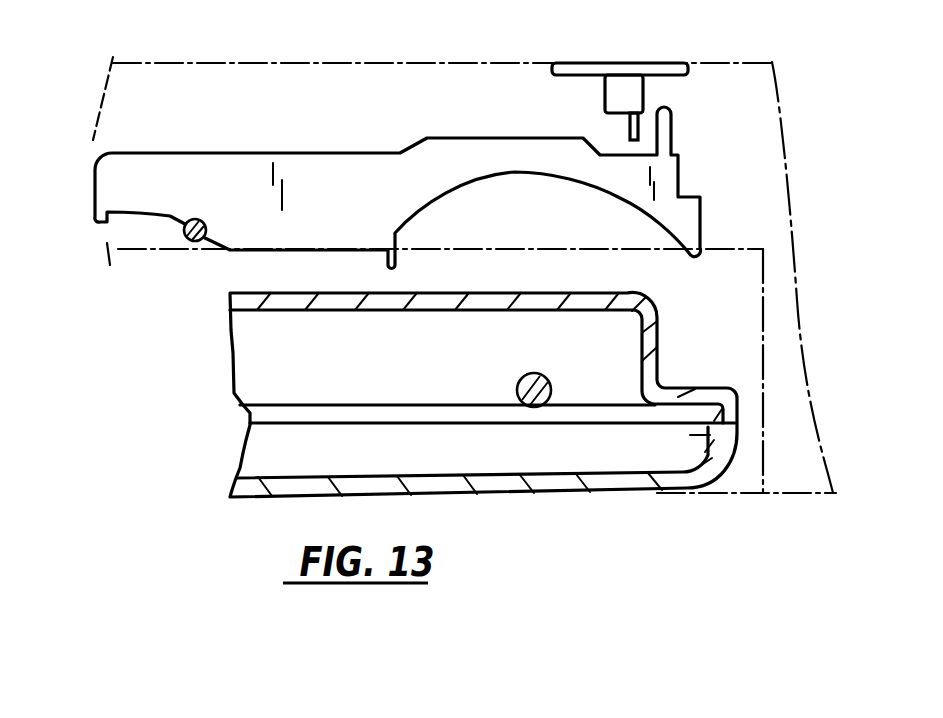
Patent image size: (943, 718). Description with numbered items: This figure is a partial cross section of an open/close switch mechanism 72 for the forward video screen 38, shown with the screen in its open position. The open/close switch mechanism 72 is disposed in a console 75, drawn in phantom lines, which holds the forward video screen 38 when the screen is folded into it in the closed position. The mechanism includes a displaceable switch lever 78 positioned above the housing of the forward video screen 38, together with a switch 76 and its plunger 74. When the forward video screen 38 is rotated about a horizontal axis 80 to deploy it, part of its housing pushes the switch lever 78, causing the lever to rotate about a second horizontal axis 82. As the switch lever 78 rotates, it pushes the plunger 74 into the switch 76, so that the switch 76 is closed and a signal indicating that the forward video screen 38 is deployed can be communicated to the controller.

The forward video screen 38 is at (266, 508).
The open/close switch mechanism 72 is at (712, 135).
The plunger 74 is at (627, 125).
The console 75 is at (232, 63).
The switch 76 is at (620, 83).
The switch lever 78 is at (280, 172).
The horizontal axis 80 is at (550, 380).
The horizontal axis 82 is at (185, 237).